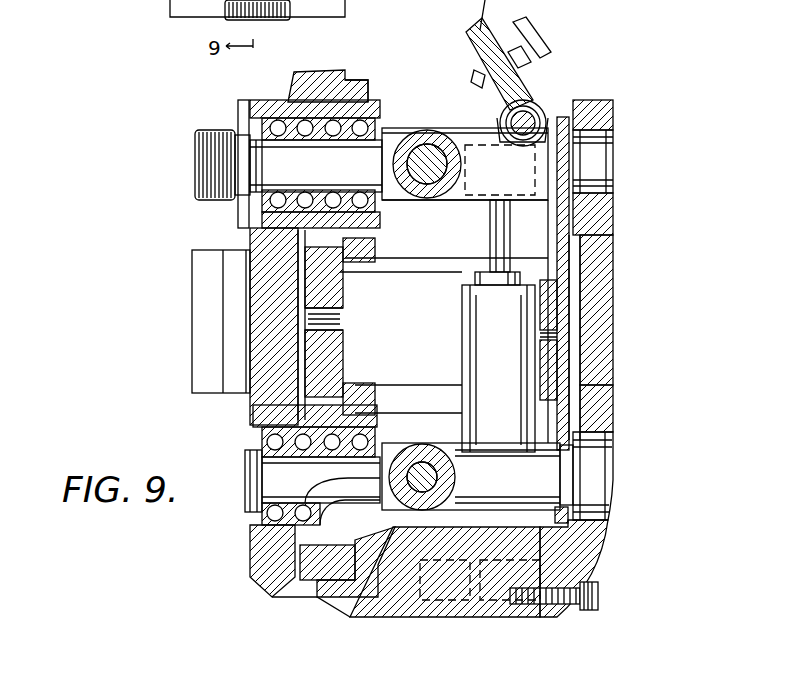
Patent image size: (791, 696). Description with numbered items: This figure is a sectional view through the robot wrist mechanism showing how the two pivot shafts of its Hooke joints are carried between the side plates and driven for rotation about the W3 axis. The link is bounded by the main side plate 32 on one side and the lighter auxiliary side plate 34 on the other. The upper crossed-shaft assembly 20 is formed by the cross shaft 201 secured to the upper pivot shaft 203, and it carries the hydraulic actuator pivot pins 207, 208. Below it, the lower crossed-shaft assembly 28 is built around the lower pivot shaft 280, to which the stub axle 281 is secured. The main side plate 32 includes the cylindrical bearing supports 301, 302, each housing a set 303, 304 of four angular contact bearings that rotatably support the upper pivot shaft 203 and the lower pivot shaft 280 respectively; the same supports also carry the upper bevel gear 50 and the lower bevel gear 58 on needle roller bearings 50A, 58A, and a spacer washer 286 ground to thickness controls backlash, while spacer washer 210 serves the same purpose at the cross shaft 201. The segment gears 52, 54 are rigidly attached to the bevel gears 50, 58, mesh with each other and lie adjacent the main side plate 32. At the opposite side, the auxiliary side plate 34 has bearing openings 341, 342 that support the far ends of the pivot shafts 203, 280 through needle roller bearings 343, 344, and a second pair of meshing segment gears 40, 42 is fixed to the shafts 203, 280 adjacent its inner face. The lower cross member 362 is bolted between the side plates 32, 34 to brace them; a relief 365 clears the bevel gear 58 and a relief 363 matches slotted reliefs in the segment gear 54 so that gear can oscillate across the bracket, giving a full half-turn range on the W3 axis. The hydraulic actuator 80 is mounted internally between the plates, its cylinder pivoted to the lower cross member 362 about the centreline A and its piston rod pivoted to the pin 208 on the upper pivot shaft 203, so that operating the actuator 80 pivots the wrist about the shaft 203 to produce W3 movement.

The crossed-shaft assembly 20 is at (472, 210).
The crossed-shaft assembly 28 is at (430, 441).
The main side plate 32 is at (272, 236).
The auxiliary side plate 34 is at (592, 273).
The segment gear 40 is at (560, 302).
The segment gear 42 is at (555, 347).
The bevel gear 50 is at (356, 82).
The needle roller bearings 50A is at (360, 88).
The segment gear 52 is at (313, 292).
The segment gear 54 is at (320, 343).
The bevel gear 58 is at (350, 372).
The needle roller bearings 58A is at (273, 597).
The hydraulic actuator 80 is at (500, 322).
The cross shaft 201 is at (420, 150).
The upper pivot shaft 203 is at (458, 200).
The hydraulic actuator pivot pin 207 is at (540, 97).
The hydraulic actuator pivot pin 208 is at (505, 172).
The spacer washer 210 is at (385, 222).
The lower pivot shaft 280 is at (247, 510).
The stub axle 281 is at (430, 480).
The spacer washer 286 is at (390, 455).
The cylindrical bearing support 301 is at (338, 110).
The cylindrical bearing support 302 is at (280, 412).
The set of angular contact bearings 303 is at (275, 128).
The set of angular contact bearings 304 is at (250, 436).
The bearing opening 341 is at (600, 125).
The bearing opening 342 is at (595, 432).
The needle roller bearings 343 is at (600, 208).
The needle roller bearings 344 is at (587, 540).
The lower cross member 362 is at (263, 587).
The relief 363 is at (320, 577).
The relief 365 is at (362, 568).
The centreline A is at (523, 623).